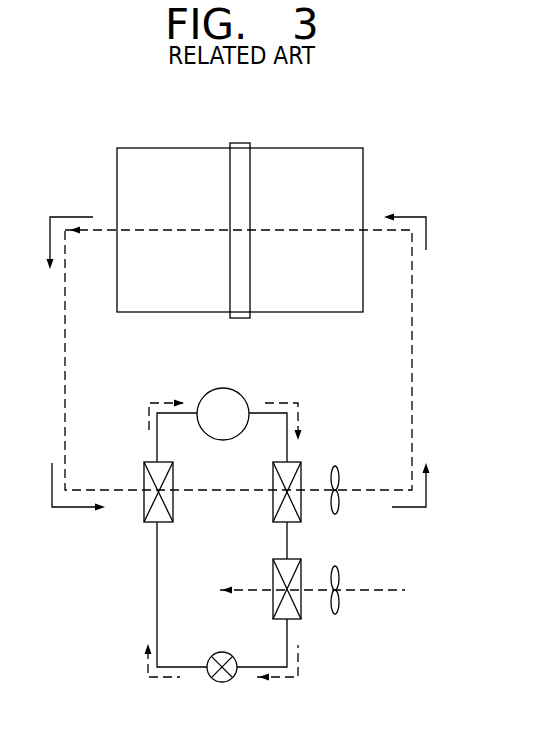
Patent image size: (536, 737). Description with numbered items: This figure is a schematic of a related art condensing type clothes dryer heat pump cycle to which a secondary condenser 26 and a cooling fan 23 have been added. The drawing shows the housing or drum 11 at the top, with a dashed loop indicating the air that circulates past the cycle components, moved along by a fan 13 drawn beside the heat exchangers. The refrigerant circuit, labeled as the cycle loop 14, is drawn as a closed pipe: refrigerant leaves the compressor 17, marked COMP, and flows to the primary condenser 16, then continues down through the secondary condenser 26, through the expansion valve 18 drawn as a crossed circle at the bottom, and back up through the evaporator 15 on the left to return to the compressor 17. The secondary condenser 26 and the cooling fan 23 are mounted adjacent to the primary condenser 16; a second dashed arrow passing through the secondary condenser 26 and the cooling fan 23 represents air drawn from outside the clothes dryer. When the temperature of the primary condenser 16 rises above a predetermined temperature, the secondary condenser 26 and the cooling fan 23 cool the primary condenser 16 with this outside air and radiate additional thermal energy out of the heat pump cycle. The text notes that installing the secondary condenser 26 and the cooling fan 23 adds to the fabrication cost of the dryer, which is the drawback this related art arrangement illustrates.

The outdoor unit housing 11 is at (293, 148).
The fan 13 is at (335, 466).
The refrigerant cycle 14 is at (136, 396).
The heat exchanger 15 is at (144, 509).
The primary condenser 16 is at (301, 502).
The compressor 17 is at (222, 388).
The expansion valve 18 is at (222, 682).
The cooling fan 23 is at (338, 576).
The secondary condenser 26 is at (301, 603).